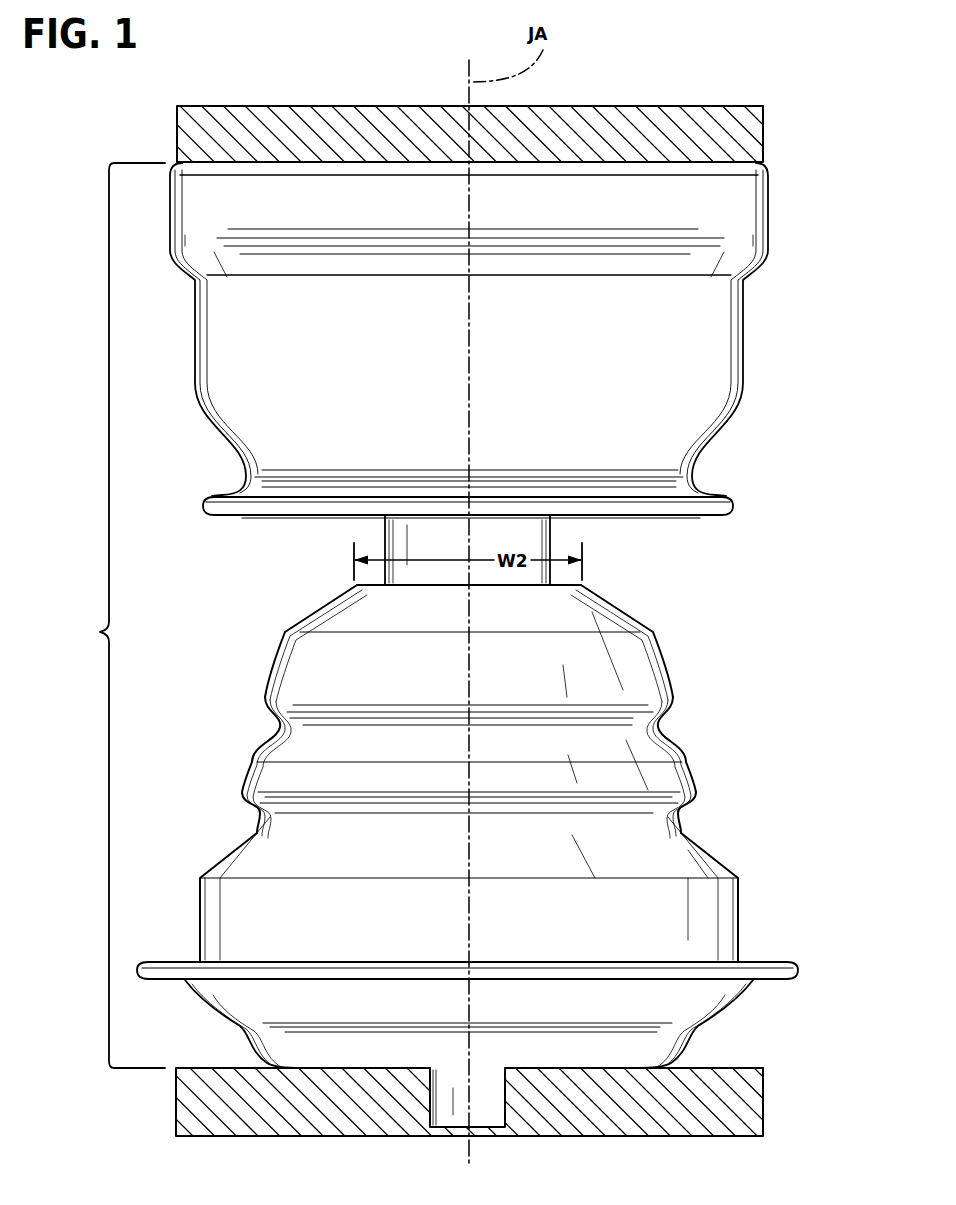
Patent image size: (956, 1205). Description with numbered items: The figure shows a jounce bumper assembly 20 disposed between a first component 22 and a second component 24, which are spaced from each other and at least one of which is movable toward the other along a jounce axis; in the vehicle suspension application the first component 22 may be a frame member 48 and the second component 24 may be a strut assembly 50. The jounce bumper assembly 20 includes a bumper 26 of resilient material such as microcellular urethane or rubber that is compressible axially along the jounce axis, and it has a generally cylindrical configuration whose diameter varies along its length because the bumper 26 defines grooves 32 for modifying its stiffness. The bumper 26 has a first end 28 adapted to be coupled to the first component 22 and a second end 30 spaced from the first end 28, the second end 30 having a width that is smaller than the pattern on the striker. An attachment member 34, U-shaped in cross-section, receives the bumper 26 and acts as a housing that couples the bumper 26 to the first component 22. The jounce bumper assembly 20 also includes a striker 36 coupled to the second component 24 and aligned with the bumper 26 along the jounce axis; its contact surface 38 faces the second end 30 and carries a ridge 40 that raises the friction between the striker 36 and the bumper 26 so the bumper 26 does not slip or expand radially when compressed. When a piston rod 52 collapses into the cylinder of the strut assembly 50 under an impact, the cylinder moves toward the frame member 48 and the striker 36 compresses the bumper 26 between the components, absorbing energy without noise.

The jounce bumper assembly 20 is at (116, 615).
The first component 22 is at (482, 1093).
The frame member 48 is at (750, 1108).
The second component 24 is at (484, 117).
The strut assembly 50 is at (763, 127).
The bumper 26 is at (662, 855).
The first end 28 is at (762, 925).
The second end 30 is at (653, 597).
The grooves 32 is at (668, 728).
The attachment member 34 is at (698, 1000).
The striker 36 is at (683, 347).
The contact surface 38 is at (707, 520).
The ridge 40 is at (255, 520).
The piston rod 52 is at (397, 533).